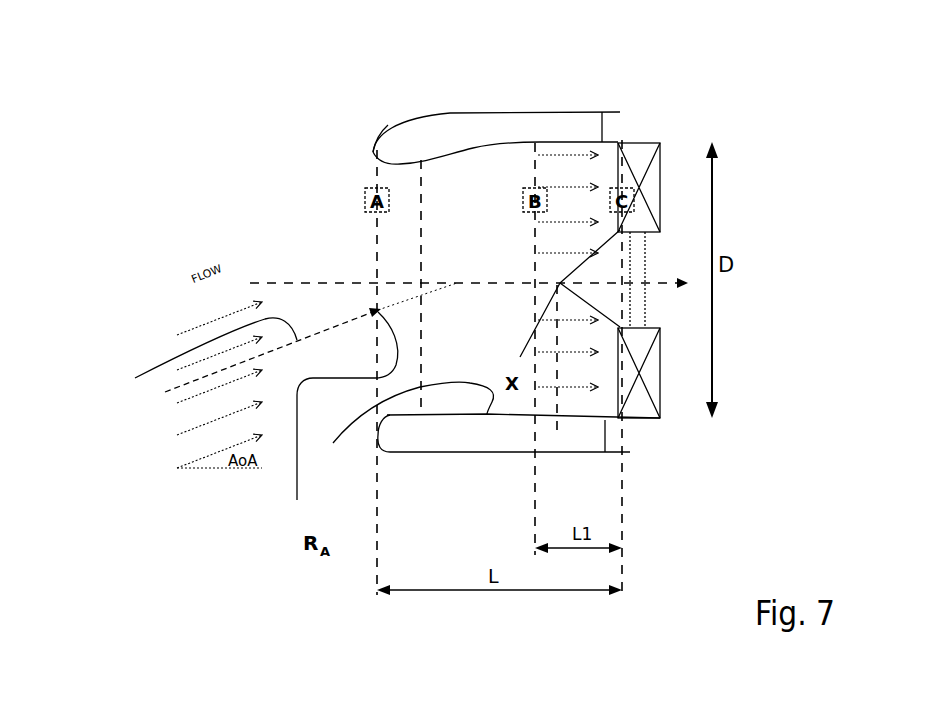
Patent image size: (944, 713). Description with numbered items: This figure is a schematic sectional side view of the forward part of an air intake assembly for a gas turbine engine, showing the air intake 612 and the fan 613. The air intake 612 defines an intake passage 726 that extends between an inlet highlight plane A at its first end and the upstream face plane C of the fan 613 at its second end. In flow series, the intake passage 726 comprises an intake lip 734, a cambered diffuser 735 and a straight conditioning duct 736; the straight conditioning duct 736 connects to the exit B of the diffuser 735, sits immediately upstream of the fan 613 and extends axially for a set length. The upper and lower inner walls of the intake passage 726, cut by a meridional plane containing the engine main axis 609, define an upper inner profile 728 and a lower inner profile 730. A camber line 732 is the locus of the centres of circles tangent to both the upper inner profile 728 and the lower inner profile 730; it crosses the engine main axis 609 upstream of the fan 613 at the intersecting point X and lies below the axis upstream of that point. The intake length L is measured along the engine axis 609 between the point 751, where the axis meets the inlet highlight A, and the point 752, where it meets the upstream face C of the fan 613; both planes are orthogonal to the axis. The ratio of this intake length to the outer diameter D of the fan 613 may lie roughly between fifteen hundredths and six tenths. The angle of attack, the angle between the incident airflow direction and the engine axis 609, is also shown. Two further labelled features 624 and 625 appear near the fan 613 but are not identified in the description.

The engine main axis 609 is at (320, 283).
The air intake 612 is at (455, 214).
The fan 613 is at (620, 230).
The duct wall 624 is at (600, 125).
The hub 625 is at (647, 252).
The intake passage 726 is at (497, 264).
The upper inner profile 728 is at (508, 190).
The lower inner profile 730 is at (404, 428).
The camber line 732 is at (272, 342).
The intake lip 734 is at (393, 237).
The diffuser 735 is at (463, 183).
The straight conditioning duct 736 is at (614, 142).
The point on engine axis at inlet highlight 751 is at (376, 285).
The point on engine axis at fan upstream face 752 is at (622, 280).